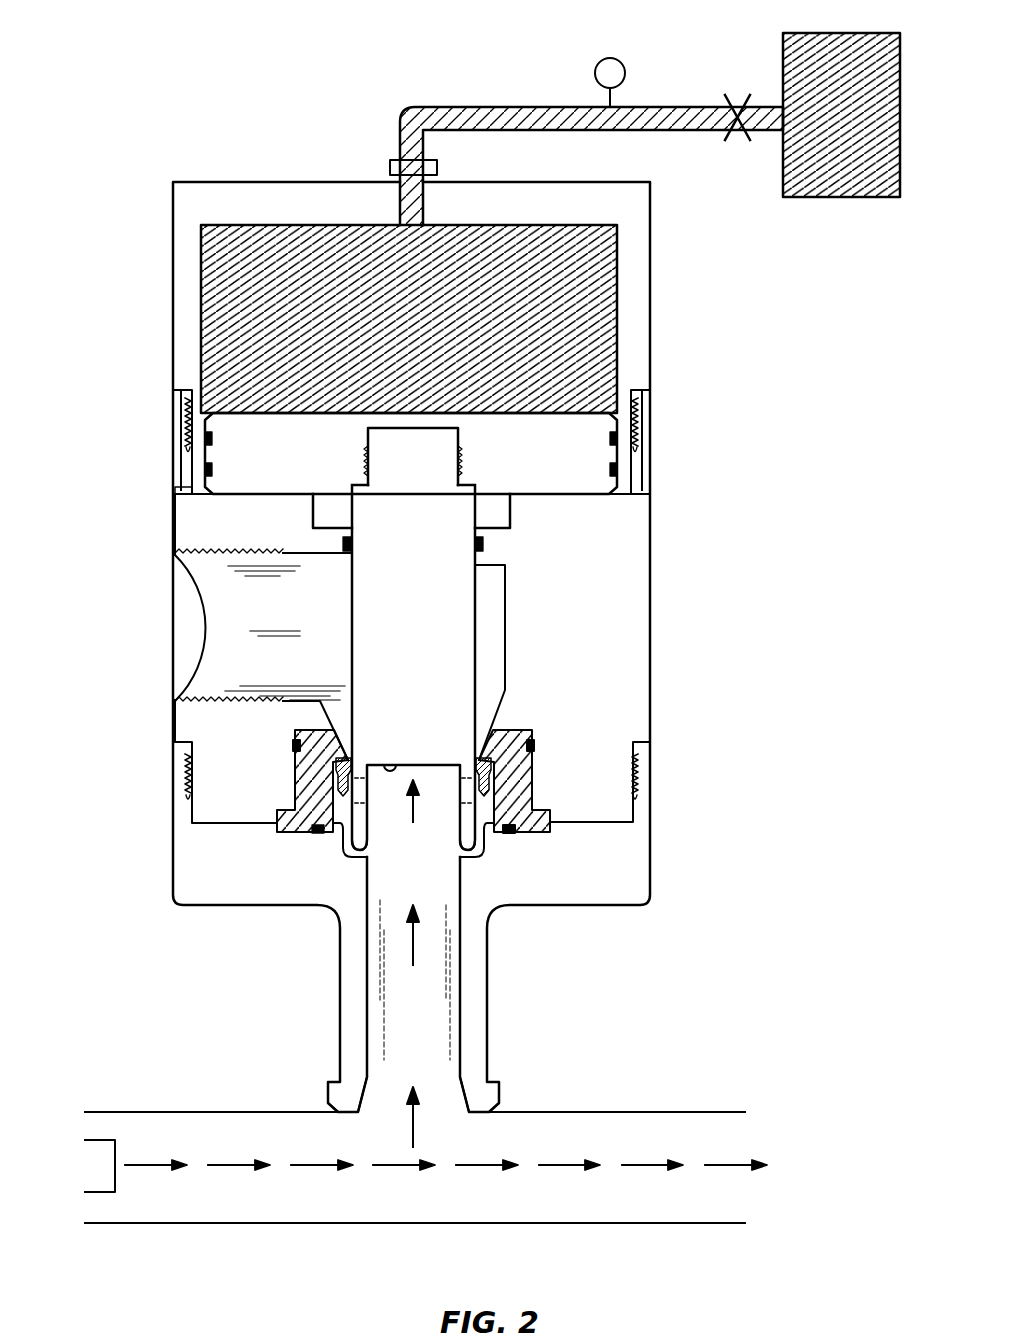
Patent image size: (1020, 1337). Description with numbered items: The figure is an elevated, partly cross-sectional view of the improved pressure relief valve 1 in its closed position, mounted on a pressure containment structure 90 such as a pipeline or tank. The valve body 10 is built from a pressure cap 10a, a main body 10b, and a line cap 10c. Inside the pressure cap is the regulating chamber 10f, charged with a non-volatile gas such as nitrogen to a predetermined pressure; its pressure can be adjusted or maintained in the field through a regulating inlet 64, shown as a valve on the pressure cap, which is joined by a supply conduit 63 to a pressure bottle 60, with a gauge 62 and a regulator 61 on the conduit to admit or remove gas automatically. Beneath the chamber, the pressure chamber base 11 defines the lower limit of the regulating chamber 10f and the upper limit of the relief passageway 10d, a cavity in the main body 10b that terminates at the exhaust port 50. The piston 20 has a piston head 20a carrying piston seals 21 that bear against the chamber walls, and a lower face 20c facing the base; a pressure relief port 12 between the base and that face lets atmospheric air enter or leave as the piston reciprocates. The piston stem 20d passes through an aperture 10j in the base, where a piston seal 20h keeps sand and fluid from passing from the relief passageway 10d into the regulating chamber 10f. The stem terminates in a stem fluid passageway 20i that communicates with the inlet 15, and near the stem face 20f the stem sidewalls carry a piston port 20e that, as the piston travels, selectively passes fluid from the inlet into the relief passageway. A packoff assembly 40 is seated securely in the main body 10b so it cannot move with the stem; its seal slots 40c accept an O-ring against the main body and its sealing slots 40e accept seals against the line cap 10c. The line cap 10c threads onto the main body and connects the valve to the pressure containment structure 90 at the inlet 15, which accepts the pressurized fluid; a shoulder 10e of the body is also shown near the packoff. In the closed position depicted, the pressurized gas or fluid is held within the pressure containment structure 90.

The pressure relief valve 1 is at (147, 78).
The valve body 10 is at (702, 413).
The pressure cap 10a is at (651, 278).
The main body 10b is at (651, 652).
The line cap 10c is at (651, 838).
The relief passageway 10d is at (217, 643).
The housing shoulder 10e is at (494, 717).
The regulating chamber 10f is at (300, 238).
The aperture 10j is at (347, 560).
The pressure chamber base 11 is at (182, 530).
The pressure relief port 12 is at (175, 488).
The inlet 15 is at (385, 1100).
The piston 20 is at (595, 478).
The piston head 20a is at (518, 472).
The lower face 20c is at (558, 497).
The piston stem 20d is at (437, 620).
The piston port 20e is at (470, 790).
The stem face 20f is at (380, 765).
The piston seal 20h is at (483, 543).
The stem fluid passageway 20i is at (437, 840).
The piston seals 21 is at (213, 468).
The packoff assembly 40 is at (472, 755).
The seal slots 40c is at (290, 748).
The sealing slots 40e is at (318, 832).
The exhaust port 50 is at (162, 672).
The pressure bottle 60 is at (838, 33).
The regulator 61 is at (748, 100).
The gauge 62 is at (604, 58).
The supply conduit 63 is at (480, 105).
The regulating inlet 64 is at (398, 163).
The pressure containment structure 90 is at (303, 1212).